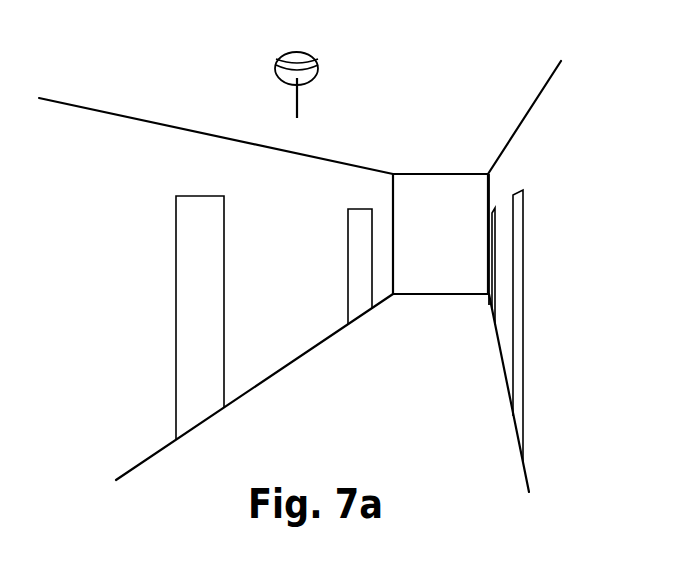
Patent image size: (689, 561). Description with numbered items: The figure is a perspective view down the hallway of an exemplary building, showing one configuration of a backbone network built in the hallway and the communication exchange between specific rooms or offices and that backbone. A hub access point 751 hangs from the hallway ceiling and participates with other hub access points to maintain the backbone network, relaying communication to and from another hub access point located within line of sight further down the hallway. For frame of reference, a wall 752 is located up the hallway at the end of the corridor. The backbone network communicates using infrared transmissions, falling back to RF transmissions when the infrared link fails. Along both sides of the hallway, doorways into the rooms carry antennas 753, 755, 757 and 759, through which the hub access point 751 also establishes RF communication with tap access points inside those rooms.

The hub access point 751 is at (298, 52).
The wall 752 is at (452, 183).
The antenna 753 is at (201, 133).
The antenna 755 is at (362, 166).
The antenna 757 is at (495, 170).
The antenna 759 is at (517, 157).